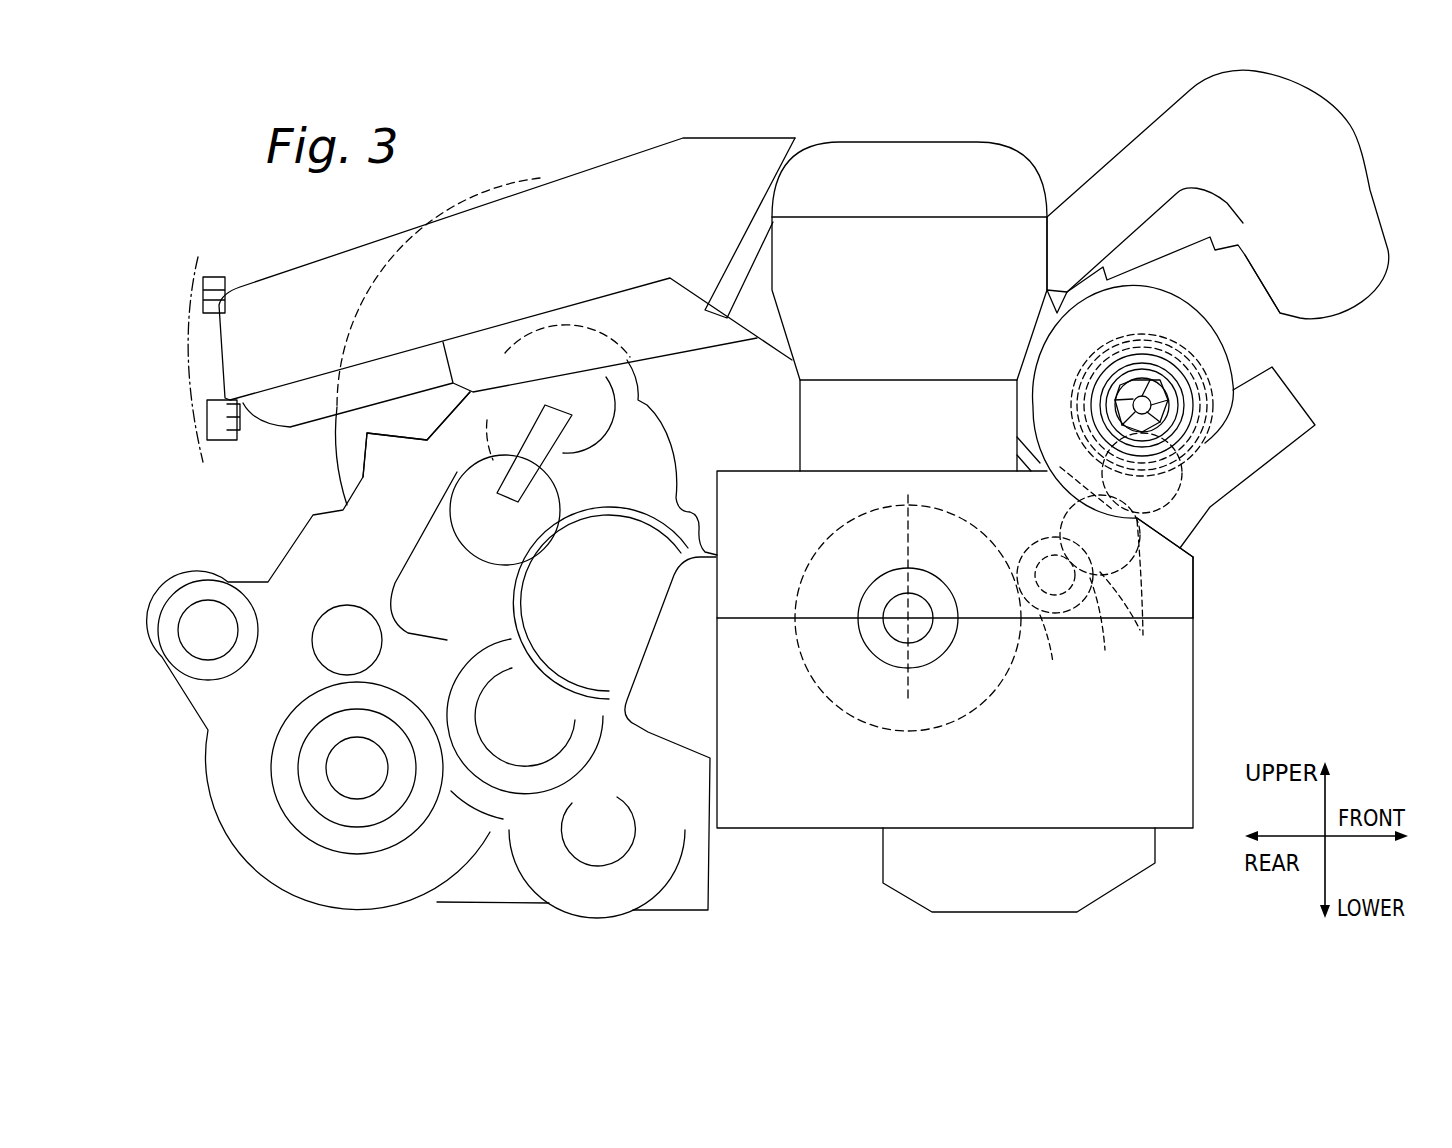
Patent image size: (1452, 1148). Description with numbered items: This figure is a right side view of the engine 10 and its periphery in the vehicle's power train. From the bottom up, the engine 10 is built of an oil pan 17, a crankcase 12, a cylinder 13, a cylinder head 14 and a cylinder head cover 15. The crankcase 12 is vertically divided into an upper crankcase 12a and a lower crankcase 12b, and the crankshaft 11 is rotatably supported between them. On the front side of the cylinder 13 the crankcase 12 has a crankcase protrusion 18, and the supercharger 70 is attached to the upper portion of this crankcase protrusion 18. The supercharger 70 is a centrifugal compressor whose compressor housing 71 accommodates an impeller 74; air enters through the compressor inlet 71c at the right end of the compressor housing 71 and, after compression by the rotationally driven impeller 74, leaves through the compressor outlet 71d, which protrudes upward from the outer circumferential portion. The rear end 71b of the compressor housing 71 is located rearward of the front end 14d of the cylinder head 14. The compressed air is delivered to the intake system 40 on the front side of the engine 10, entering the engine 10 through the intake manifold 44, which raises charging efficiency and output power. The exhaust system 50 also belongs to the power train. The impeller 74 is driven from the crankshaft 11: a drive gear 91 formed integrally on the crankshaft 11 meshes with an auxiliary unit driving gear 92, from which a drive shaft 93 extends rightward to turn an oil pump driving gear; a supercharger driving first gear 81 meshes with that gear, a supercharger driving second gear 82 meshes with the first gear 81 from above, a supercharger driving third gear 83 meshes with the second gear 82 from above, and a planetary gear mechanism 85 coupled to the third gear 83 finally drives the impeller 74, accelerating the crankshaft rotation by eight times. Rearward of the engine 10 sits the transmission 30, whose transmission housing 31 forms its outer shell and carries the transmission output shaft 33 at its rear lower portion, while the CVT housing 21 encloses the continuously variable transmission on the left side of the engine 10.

The engine 10 is at (905, 132).
The crankshaft 11 is at (898, 630).
The crankcase 12 is at (1318, 628).
The upper crankcase 12a is at (1190, 603).
The lower crankcase 12b is at (1190, 667).
The cylinder 13 is at (894, 439).
The cylinder head 14 is at (893, 308).
The front end of the cylinder head 14d is at (1050, 248).
The cylinder head cover 15 is at (898, 195).
The oil pan 17 is at (988, 879).
The crankcase protrusion 18 is at (1187, 580).
The CVT housing 21 is at (523, 176).
The transmission 30 is at (270, 571).
The transmission housing 31 is at (317, 533).
The transmission output shaft 33 is at (317, 770).
The intake system 40 is at (1304, 343).
The intake manifold 44 is at (1288, 226).
The exhaust system 50 is at (293, 238).
The supercharger 70 is at (1164, 402).
The compressor housing 71 is at (1207, 483).
The rear end of the compressor housing 71b is at (1032, 392).
The compressor inlet 71c is at (1125, 350).
The compressor outlet 71d is at (1318, 430).
The impeller 74 is at (1177, 373).
The supercharger driving first gear 81 is at (1128, 589).
The supercharger driving second gear 82 is at (1121, 519).
The supercharger driving third gear 83 is at (1083, 388).
The planetary gear mechanism 85 is at (1091, 330).
The drive gear 91 is at (980, 707).
The auxiliary unit driving gear 92 is at (1049, 655).
The drive shaft 93 is at (1067, 607).